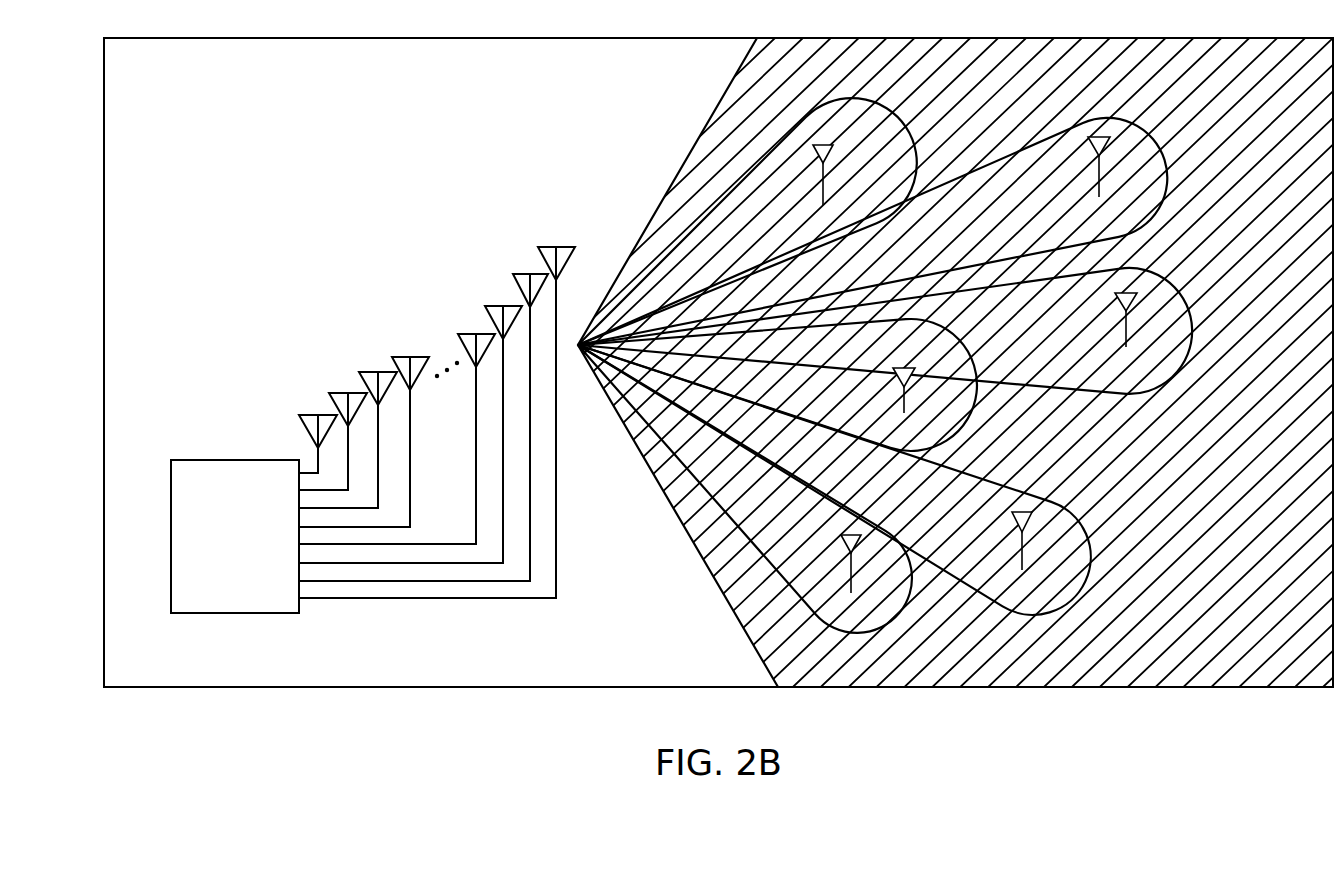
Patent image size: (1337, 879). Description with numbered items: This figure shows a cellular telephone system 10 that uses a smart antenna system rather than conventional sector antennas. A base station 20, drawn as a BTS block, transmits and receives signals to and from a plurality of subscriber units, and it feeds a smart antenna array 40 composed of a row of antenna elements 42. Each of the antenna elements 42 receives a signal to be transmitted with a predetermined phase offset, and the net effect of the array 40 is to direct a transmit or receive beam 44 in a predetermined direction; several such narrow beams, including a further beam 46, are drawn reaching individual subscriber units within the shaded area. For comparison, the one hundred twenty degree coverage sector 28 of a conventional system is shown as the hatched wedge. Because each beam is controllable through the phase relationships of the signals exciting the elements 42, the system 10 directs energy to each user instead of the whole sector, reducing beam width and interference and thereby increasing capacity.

The cellular telephone system 10 is at (703, 362).
The base station 20 is at (225, 460).
The coverage sector 28 is at (657, 485).
The smart antenna array 40 is at (427, 422).
The antenna element 42 is at (309, 414).
The beam 44 is at (805, 108).
The beam 46 is at (1168, 160).